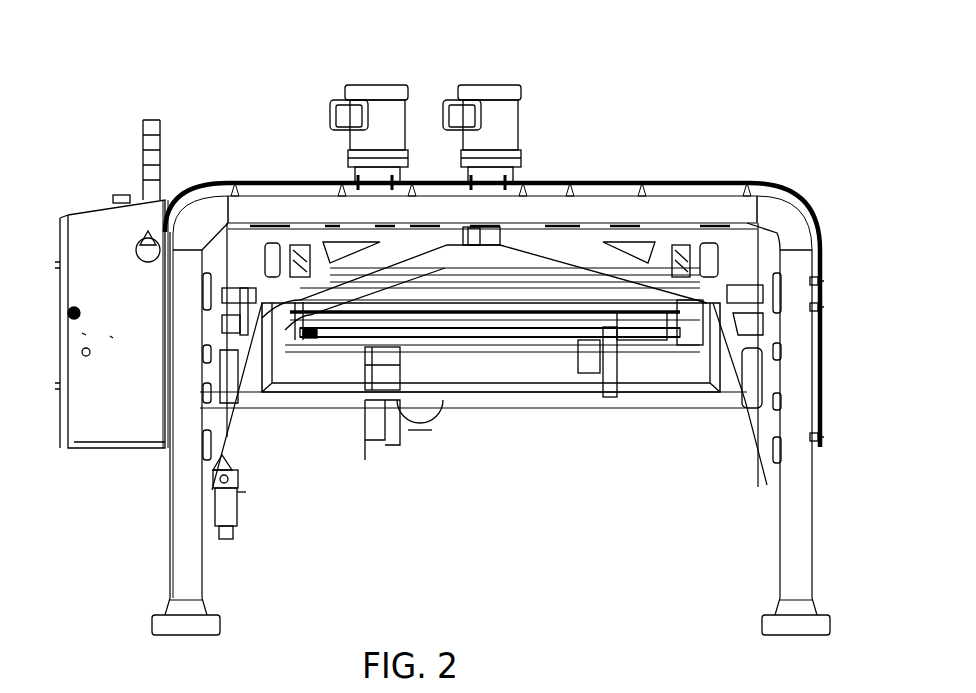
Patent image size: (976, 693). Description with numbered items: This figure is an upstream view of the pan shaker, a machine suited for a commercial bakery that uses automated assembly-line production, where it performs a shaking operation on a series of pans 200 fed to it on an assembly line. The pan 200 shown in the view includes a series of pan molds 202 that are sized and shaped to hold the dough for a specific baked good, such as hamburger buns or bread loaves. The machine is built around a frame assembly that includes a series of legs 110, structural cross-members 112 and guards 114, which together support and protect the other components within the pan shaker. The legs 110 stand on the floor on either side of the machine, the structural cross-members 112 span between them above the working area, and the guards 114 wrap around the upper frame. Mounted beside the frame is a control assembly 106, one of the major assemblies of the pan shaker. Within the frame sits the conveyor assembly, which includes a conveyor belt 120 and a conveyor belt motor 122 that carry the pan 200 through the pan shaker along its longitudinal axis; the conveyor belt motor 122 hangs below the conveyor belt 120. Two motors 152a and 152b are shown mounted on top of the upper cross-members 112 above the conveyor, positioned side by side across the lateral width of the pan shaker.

The control assembly 106 is at (112, 427).
The legs 110 is at (191, 570).
The structural cross-members 112 is at (680, 210).
The guards 114 is at (787, 200).
The conveyor belt 120 is at (500, 363).
The conveyor belt motor 122 is at (420, 422).
The motor 152a is at (463, 88).
The motor 152b is at (355, 88).
The pan 200 is at (597, 340).
The pan molds 202 is at (632, 342).